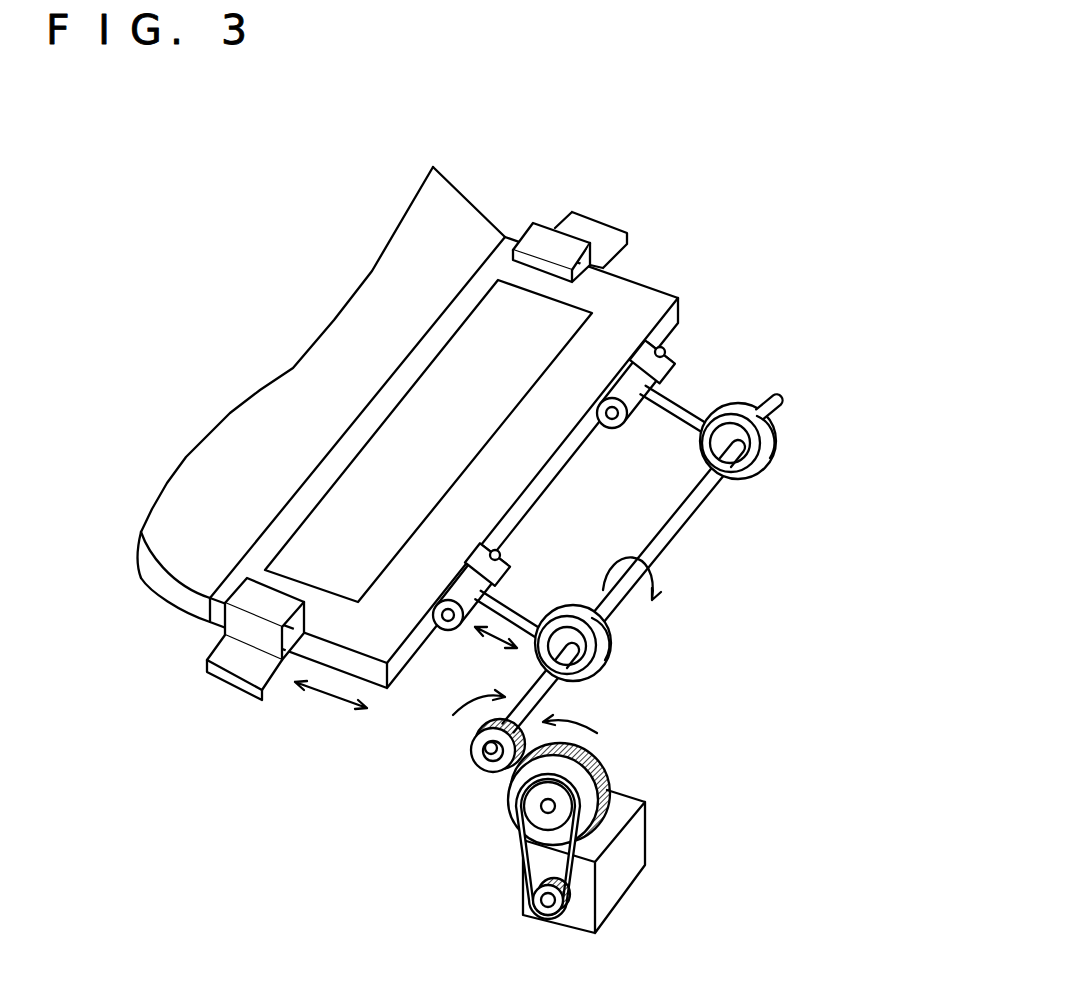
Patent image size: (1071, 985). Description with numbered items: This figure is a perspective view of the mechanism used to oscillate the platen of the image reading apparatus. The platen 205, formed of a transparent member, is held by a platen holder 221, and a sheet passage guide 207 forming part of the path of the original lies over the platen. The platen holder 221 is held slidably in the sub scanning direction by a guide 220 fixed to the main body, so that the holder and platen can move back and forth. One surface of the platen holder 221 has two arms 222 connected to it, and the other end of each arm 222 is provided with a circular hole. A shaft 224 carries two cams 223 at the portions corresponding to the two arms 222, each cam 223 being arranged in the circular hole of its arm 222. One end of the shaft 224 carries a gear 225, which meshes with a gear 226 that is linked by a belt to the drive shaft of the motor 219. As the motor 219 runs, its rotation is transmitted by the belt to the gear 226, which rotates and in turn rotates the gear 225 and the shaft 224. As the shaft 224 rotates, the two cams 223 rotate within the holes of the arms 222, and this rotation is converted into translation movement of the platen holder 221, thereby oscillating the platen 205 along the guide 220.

The platen 205 is at (496, 323).
The sheet passage guide 207 is at (379, 288).
The motor 219 is at (633, 866).
The guide 220 is at (588, 233).
The platen holder 221 is at (640, 307).
The arm 222 is at (770, 437).
The cam 223 is at (723, 436).
The shaft 224 is at (683, 535).
The gear 225 is at (476, 750).
The gear 226 is at (613, 773).